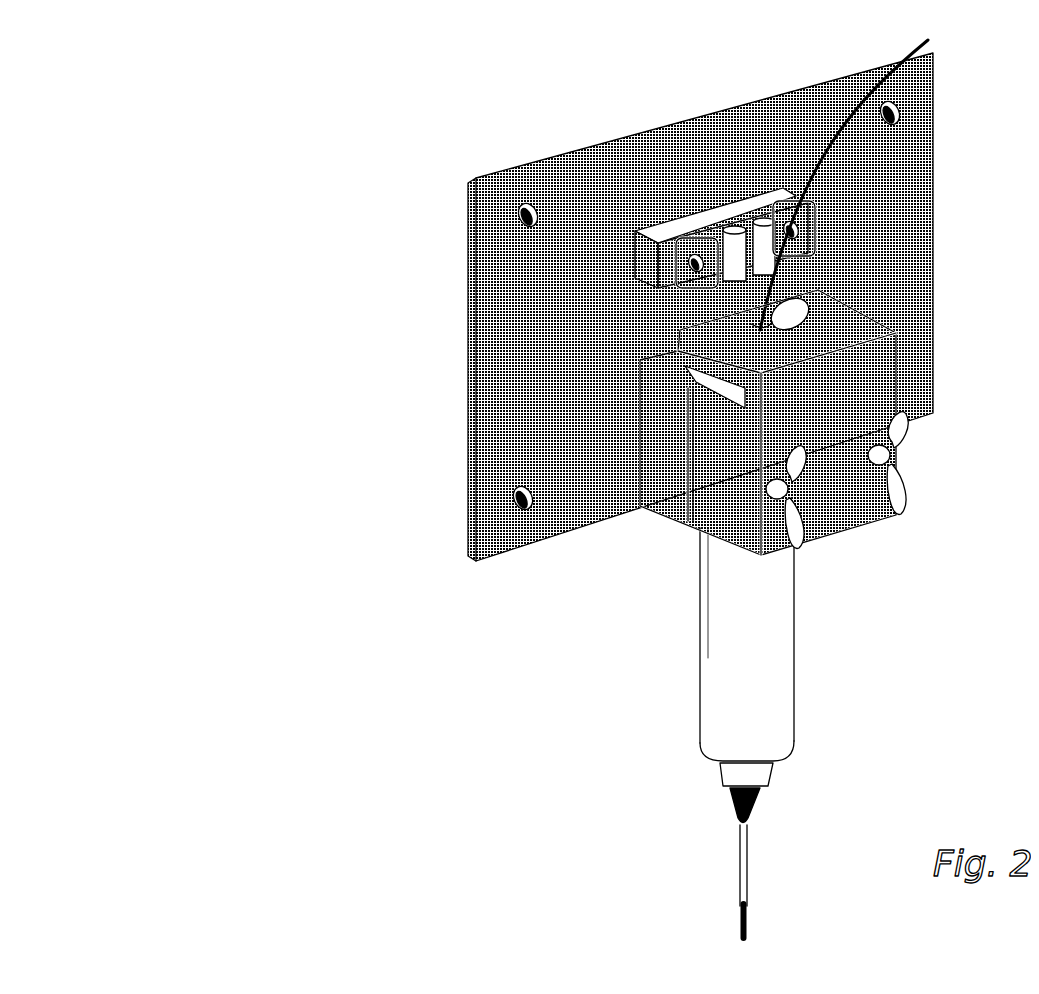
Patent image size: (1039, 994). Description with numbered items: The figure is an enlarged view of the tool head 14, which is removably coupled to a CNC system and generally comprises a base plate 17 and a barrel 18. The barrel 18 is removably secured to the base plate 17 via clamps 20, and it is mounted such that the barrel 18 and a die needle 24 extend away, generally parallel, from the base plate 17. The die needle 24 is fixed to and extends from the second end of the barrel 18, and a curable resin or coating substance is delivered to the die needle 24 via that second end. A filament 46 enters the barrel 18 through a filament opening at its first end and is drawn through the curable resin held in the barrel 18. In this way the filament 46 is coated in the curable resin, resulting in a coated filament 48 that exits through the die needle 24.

The tool head 14 is at (262, 300).
The base plate 17 is at (875, 226).
The barrel 18 is at (753, 657).
The clamps 20 is at (712, 494).
The die needle 24 is at (740, 853).
The filament 46 is at (808, 140).
The coated filament 48 is at (733, 912).